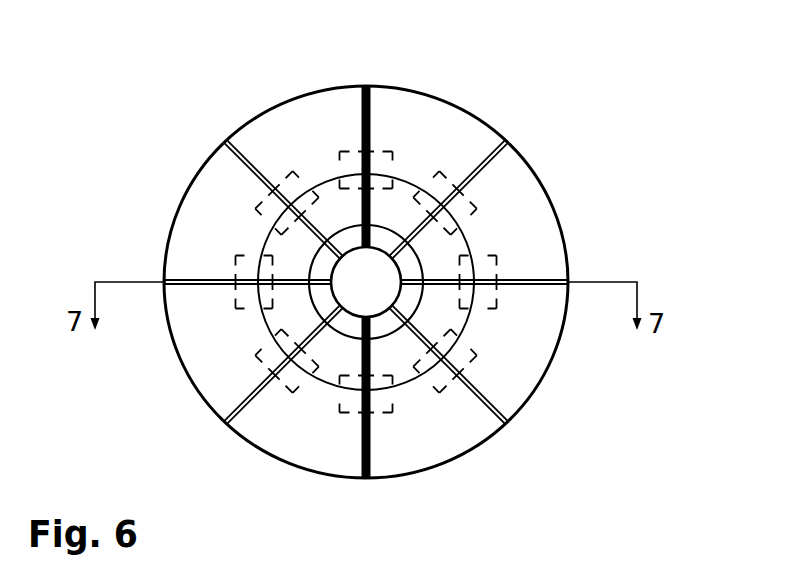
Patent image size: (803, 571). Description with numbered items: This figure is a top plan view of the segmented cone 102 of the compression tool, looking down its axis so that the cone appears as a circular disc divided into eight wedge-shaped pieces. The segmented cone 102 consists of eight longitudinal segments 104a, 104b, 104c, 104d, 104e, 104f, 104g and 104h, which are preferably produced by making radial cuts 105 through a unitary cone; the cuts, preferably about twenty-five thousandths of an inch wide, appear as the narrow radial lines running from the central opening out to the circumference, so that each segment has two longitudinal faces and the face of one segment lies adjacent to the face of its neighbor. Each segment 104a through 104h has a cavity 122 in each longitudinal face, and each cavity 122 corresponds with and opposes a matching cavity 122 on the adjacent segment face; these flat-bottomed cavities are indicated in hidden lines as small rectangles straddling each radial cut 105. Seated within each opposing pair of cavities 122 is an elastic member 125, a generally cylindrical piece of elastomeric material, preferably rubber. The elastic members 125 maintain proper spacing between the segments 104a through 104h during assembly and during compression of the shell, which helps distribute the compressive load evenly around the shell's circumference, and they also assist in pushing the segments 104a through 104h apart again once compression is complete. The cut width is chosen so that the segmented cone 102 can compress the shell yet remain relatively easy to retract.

The segmented cone 102 is at (369, 280).
The longitudinal segment 104a is at (558, 210).
The longitudinal segment 104b is at (533, 400).
The longitudinal segment 104c is at (445, 467).
The longitudinal segment 104d is at (260, 467).
The longitudinal segment 104e is at (178, 368).
The longitudinal segment 104f is at (178, 207).
The longitudinal segment 104g is at (292, 100).
The longitudinal segment 104h is at (457, 100).
The radial cuts 105 is at (368, 87).
The cavity 122 is at (472, 202).
The elastic member 125 is at (237, 293).